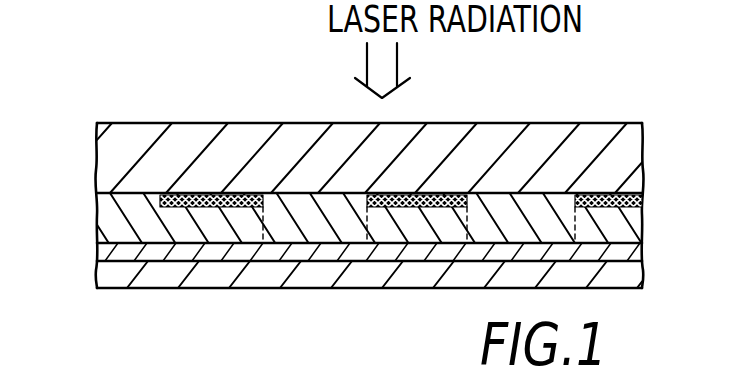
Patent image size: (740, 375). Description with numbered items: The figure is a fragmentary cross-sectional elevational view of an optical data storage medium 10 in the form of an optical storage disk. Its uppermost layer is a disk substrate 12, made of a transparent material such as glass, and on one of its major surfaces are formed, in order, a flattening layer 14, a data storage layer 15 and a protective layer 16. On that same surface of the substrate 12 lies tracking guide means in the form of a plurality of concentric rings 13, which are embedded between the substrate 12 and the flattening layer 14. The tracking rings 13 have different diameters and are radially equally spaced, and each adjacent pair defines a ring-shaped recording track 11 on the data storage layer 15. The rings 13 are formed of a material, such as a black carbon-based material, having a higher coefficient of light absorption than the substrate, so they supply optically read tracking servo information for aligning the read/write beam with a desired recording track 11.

The optical data storage medium 10 is at (154, 100).
The recording track 11 is at (310, 250).
The disk substrate 12 is at (113, 155).
The concentric rings 13 is at (219, 196).
The flattening layer 14 is at (110, 217).
The data storage layer 15 is at (110, 251).
The protective layer 16 is at (117, 272).